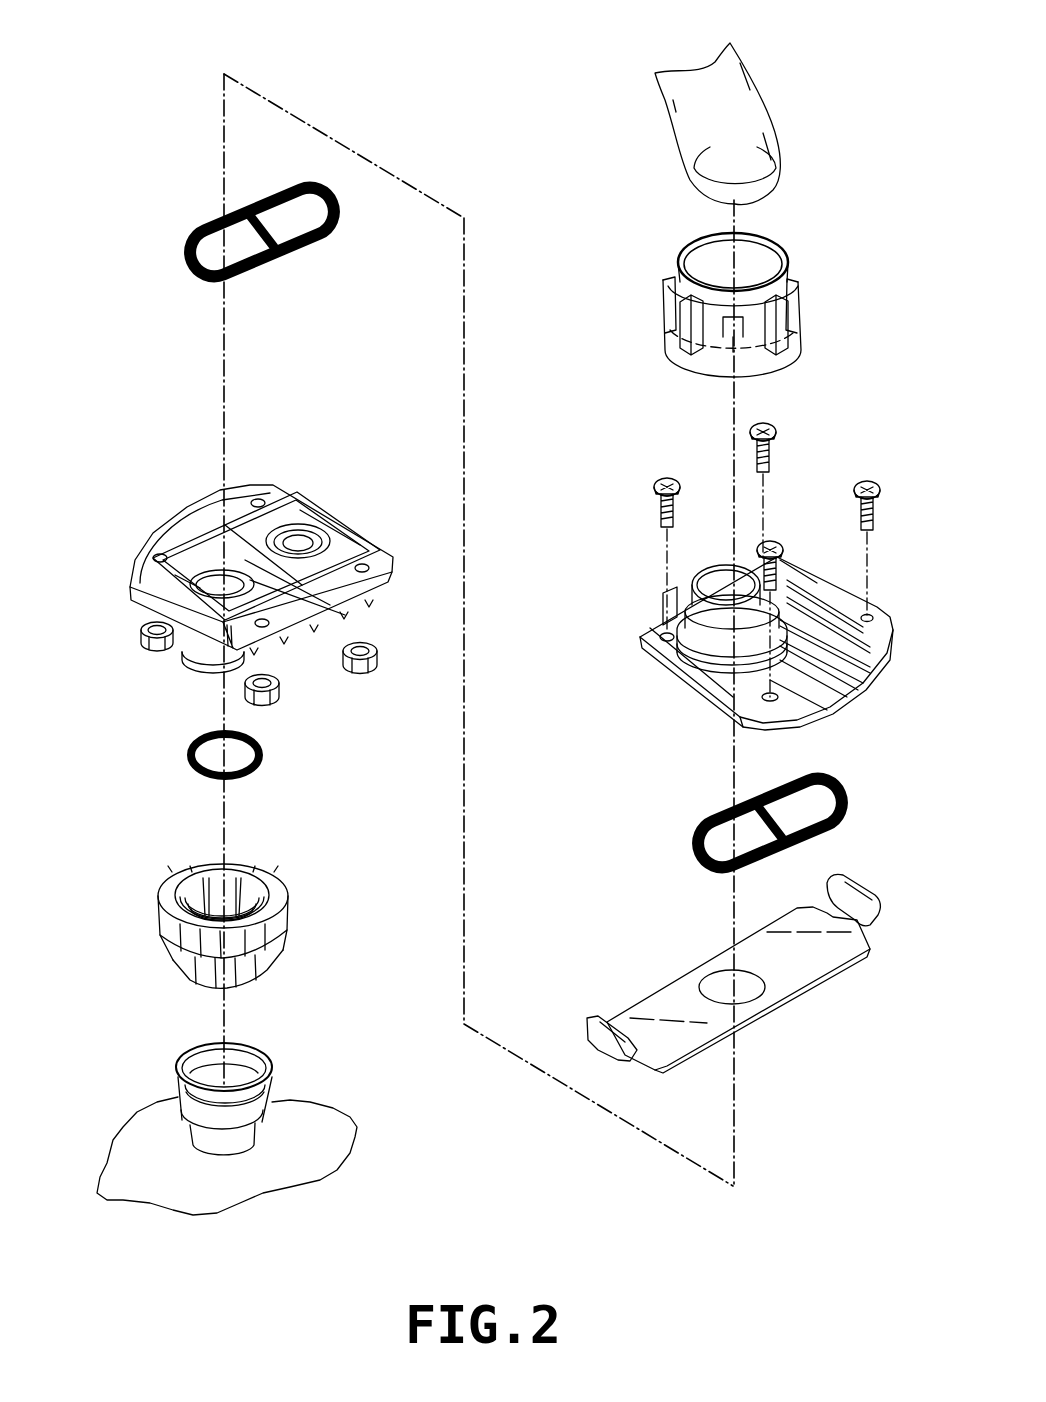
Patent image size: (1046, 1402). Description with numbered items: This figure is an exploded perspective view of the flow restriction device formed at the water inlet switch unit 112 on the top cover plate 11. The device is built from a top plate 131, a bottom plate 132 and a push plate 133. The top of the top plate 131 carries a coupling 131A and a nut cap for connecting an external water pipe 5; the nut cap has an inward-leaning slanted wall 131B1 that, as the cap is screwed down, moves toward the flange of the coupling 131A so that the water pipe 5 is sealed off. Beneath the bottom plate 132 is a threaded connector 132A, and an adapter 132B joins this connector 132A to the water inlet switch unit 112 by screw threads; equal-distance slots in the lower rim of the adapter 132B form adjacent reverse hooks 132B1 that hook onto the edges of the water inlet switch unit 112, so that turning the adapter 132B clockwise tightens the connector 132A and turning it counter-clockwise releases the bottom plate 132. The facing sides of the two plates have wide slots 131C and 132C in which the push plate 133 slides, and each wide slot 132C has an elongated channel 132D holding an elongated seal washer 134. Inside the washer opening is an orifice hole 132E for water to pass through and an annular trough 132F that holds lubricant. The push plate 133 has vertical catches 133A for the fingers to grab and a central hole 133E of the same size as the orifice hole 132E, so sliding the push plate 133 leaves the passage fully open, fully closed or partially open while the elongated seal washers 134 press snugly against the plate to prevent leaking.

The water pipe 5 is at (752, 108).
The top cover plate 11 is at (325, 1132).
The water inlet switch unit 112 is at (243, 1076).
The top plate 131 is at (715, 582).
The coupling 131A is at (721, 574).
The slanted wall 131B1 is at (790, 265).
The wide slot 131C is at (645, 695).
The bottom plate 132 is at (249, 563).
The connector 132A is at (179, 669).
The adapter 132B is at (268, 899).
The reverse hook 132B1 is at (230, 990).
The wide slot 132C is at (302, 481).
The elongated channel 132D is at (323, 528).
The orifice hole 132E is at (213, 583).
The annular trough 132F is at (297, 537).
The push plate 133 is at (716, 979).
The vertical catch 133A is at (593, 1017).
The hole 133E is at (750, 992).
The elongated seal washer 134 is at (328, 238).